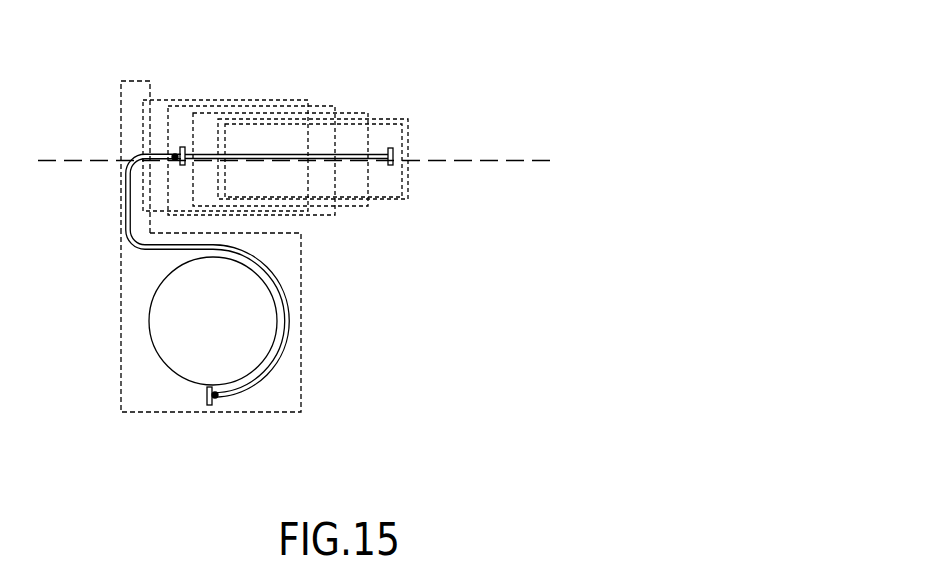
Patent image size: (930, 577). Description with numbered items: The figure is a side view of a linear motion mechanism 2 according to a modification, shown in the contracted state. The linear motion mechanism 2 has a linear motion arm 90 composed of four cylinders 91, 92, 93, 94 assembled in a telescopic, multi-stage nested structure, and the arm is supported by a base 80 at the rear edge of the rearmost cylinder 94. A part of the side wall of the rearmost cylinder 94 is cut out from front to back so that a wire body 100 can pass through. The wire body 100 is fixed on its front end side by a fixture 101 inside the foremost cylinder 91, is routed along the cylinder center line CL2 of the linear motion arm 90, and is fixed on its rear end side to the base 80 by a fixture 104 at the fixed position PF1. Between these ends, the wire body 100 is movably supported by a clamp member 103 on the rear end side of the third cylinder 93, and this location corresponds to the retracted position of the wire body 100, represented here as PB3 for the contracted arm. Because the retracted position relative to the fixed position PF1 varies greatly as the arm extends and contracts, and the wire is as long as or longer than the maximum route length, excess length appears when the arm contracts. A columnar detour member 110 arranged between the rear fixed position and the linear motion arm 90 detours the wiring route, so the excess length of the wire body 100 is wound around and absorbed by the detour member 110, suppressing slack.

The linear motion mechanism 2 is at (447, 296).
The base 80 is at (300, 346).
The linear motion arm 90 is at (407, 214).
The foremost cylinder 91 is at (383, 119).
The cylinder 92 is at (355, 113).
The third cylinder 93 is at (333, 106).
The rearmost cylinder 94 is at (274, 99).
The wire body 100 is at (126, 210).
The fixture 101 is at (393, 148).
The clamp member 103 is at (181, 147).
The fixture 104 is at (209, 405).
The detour member 110 is at (150, 332).
The cylinder center line CL2 is at (510, 160).
The retracted position PB3 is at (173, 156).
The fixed position PF1 is at (216, 397).